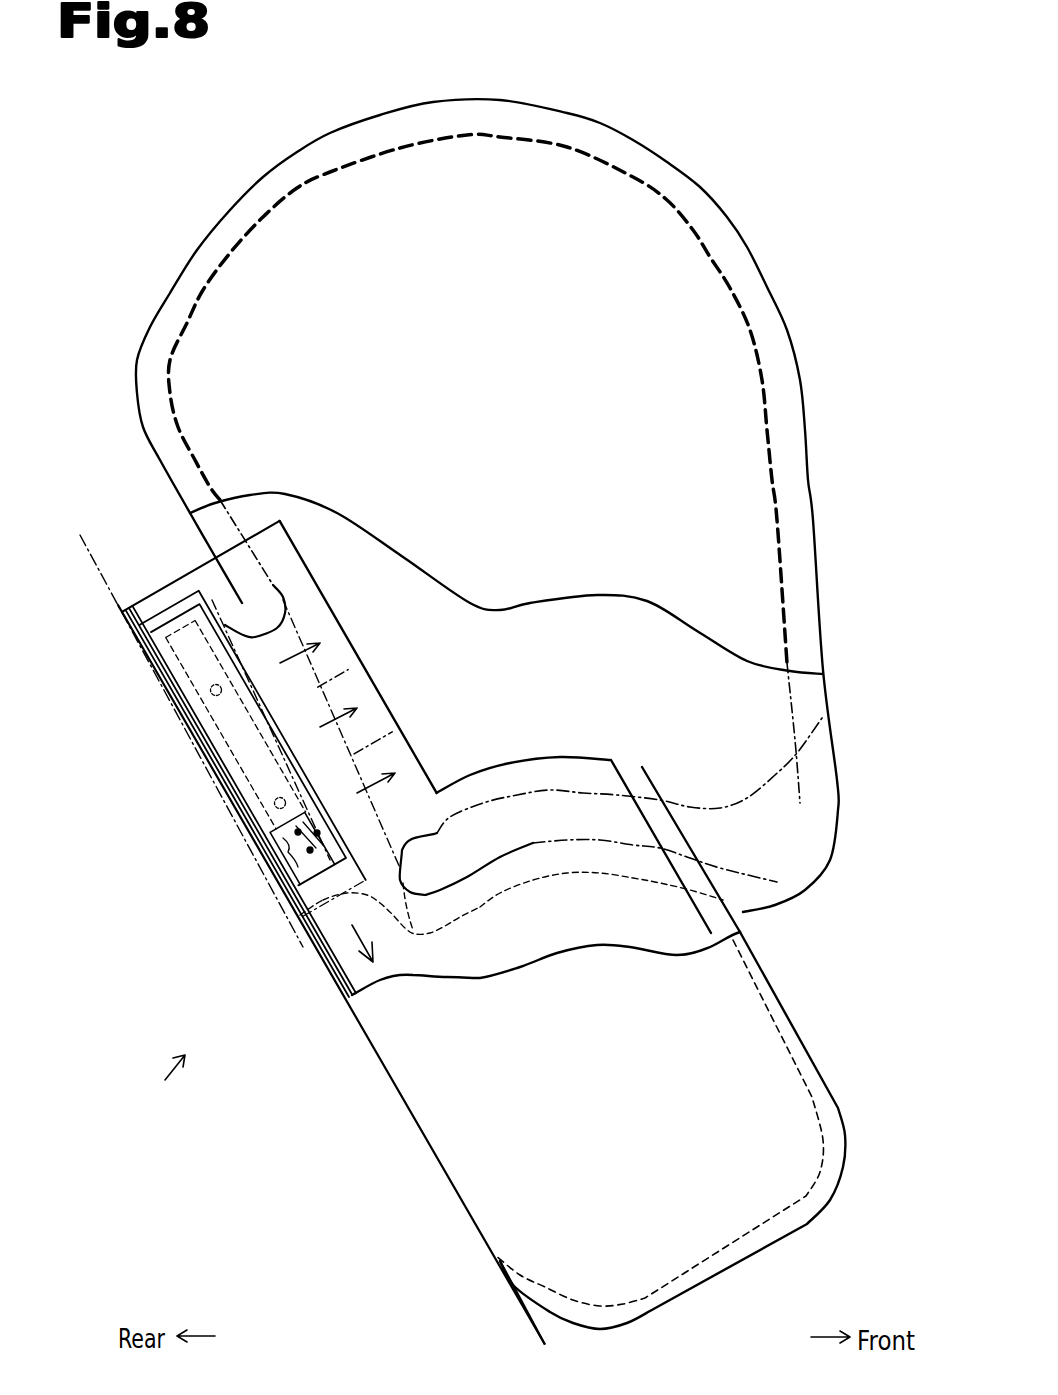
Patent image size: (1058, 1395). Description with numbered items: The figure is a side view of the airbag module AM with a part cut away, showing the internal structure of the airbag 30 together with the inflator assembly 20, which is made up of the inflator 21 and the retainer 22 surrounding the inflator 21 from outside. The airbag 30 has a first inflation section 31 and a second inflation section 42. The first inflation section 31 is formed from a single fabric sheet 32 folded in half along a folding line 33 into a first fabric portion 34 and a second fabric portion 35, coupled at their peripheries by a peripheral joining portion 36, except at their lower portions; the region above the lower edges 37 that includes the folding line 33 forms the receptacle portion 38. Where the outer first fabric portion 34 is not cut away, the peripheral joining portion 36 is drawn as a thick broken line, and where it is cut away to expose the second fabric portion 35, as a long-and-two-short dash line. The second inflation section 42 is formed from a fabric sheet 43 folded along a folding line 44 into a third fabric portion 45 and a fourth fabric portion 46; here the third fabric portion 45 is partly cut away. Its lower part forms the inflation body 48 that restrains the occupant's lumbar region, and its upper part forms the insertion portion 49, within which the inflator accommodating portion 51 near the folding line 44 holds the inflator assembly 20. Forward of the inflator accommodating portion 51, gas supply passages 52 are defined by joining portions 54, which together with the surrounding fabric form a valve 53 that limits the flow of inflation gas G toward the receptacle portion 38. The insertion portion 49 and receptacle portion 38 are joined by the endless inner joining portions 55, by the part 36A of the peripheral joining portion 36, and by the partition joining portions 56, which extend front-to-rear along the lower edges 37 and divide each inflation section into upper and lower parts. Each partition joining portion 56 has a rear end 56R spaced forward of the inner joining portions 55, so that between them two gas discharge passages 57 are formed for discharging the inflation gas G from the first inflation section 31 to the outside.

The inflator assembly 20 is at (224, 800).
The inflator 21 is at (187, 726).
The retainer 22 is at (207, 773).
The airbag 30 is at (686, 1113).
The first inflation section 31 is at (767, 897).
The fabric sheet 32 is at (508, 505).
The folding line 33 is at (102, 563).
The first fabric portion 34 is at (800, 557).
The second fabric portion 35 is at (817, 697).
The peripheral joining portion 36 is at (767, 434).
The part of peripheral joining portion 36A is at (306, 682).
The lower edges 37 is at (470, 927).
The receptacle portion 38 is at (305, 933).
The second inflation section 42 is at (792, 1023).
The fabric sheet 43 is at (331, 974).
The folding line 44 is at (522, 1323).
The third fabric portion 45 is at (433, 1150).
The fourth fabric portion 46 is at (352, 998).
The inflation body 48 is at (553, 760).
The insertion portion 49 is at (303, 543).
The inflator accommodating portion 51 is at (238, 835).
The gas supply passages 52 is at (303, 577).
The valve 53 is at (380, 565).
The joining portions 54 is at (349, 668).
The inner joining portions 55 is at (170, 620).
The partition joining portions 56 is at (750, 800).
The rear end 56R is at (401, 927).
The gas discharge passages 57 is at (383, 877).
The inflation gas G is at (325, 714).
The airbag module AM is at (167, 1086).